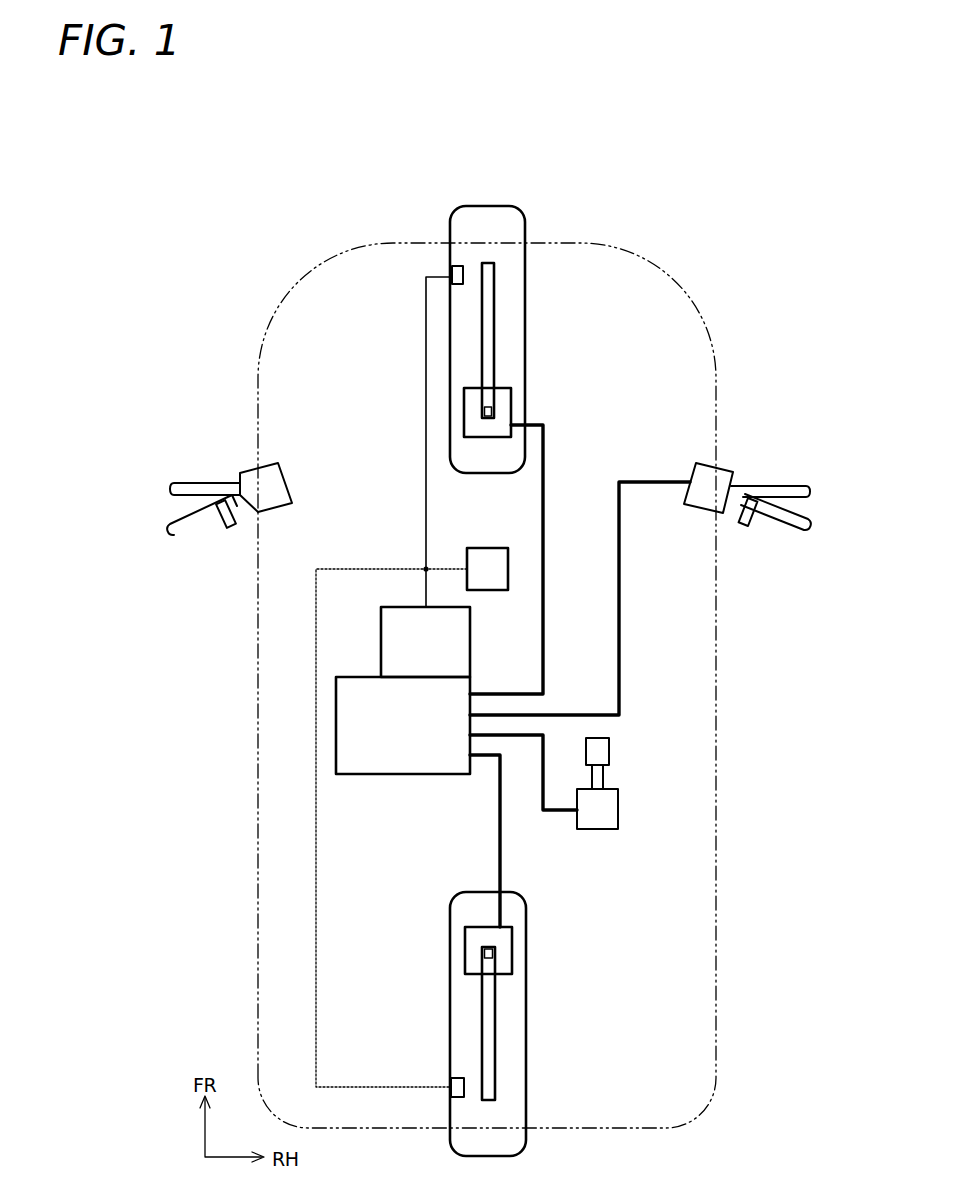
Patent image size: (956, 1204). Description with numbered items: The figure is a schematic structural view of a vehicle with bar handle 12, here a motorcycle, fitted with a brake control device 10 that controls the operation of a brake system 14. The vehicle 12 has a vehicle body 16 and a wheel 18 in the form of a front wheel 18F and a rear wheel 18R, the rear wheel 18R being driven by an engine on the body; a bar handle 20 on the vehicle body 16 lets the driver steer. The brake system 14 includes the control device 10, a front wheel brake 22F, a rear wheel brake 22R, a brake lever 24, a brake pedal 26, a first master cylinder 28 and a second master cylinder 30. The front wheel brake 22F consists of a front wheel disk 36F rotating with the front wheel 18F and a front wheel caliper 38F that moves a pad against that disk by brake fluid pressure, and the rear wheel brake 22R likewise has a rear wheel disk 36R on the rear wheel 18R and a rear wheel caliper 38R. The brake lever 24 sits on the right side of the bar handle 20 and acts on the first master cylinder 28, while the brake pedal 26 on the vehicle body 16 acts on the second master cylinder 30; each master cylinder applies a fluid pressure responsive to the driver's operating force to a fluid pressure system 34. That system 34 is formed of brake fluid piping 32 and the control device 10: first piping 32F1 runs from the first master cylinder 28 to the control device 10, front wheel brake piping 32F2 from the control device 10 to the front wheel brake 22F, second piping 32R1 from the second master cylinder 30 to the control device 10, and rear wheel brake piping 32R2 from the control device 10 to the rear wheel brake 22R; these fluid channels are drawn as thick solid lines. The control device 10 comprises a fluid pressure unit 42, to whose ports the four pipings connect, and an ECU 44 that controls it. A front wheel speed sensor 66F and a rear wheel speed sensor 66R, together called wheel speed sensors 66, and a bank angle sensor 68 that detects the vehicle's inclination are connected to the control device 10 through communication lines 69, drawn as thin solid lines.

The brake control device 10 is at (374, 595).
The vehicle with bar handle 12 is at (298, 169).
The brake system 14 is at (316, 362).
The vehicle body 16 is at (675, 283).
The wheel 18 is at (489, 199).
The front wheel 18F is at (524, 214).
The rear wheel 18R is at (521, 1149).
The bar handle 20 is at (248, 470).
The front wheel brake 22F is at (499, 303).
The rear wheel brake 22R is at (499, 1060).
The brake lever 24 is at (780, 487).
The brake pedal 26 is at (609, 751).
The first master cylinder 28 is at (722, 478).
The second master cylinder 30 is at (618, 811).
The brake fluid piping 32 is at (580, 662).
The first piping 32F1 is at (637, 479).
The front wheel brake piping 32F2 is at (547, 590).
The second piping 32R1 is at (553, 813).
The rear wheel brake piping 32R2 is at (503, 876).
The fluid pressure system 34 is at (662, 657).
The front wheel disk 36F is at (496, 343).
The rear wheel disk 36R is at (496, 1017).
The front wheel caliper 38F is at (511, 392).
The rear wheel caliper 38R is at (512, 974).
The fluid pressure unit 42 is at (420, 776).
The ECU 44 is at (381, 640).
The wheel speed sensors 66 is at (407, 681).
The front wheel speed sensor 66F is at (459, 285).
The rear wheel speed sensor 66R is at (460, 1078).
The bank angle sensor 68 is at (490, 548).
The communication lines 69 is at (426, 468).